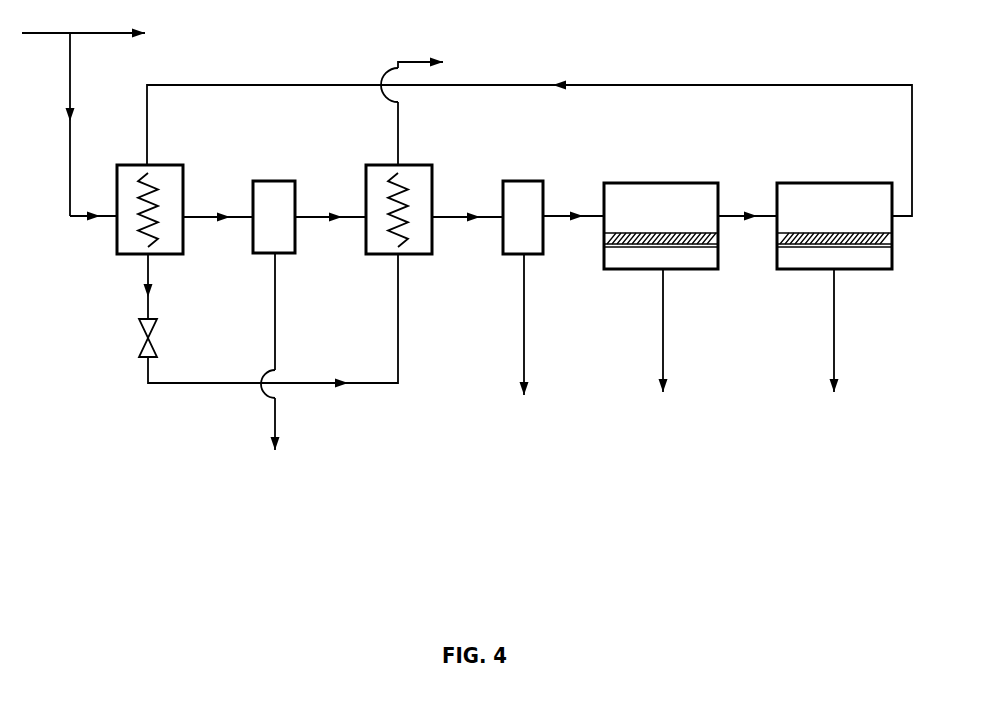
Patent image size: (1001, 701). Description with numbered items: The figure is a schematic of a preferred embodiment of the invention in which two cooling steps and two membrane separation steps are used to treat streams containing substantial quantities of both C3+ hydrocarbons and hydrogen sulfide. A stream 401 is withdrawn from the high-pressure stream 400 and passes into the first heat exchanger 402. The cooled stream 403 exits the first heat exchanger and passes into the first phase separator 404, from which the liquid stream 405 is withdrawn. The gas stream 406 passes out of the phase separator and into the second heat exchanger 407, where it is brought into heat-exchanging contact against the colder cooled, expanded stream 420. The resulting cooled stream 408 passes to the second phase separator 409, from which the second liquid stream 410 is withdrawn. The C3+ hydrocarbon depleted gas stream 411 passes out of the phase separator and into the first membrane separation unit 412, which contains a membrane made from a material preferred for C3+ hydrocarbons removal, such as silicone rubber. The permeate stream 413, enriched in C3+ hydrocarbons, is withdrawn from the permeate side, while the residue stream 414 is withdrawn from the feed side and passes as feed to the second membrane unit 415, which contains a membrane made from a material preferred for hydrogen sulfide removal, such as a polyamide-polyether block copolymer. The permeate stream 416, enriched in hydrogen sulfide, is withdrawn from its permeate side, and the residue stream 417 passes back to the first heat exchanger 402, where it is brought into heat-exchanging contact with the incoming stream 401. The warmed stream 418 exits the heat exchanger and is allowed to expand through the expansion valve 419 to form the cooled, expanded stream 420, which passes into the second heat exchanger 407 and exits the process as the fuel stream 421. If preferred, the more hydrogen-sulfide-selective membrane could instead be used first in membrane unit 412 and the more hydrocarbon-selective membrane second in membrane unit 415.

The high-pressure stream 400 is at (103, 35).
The stream 401 is at (92, 127).
The first heat exchanger 402 is at (117, 255).
The cooled stream 403 is at (218, 205).
The first phase separator 404 is at (253, 254).
The liquid stream 405 is at (272, 365).
The gas stream 406 is at (330, 205).
The second heat exchanger 407 is at (366, 255).
The cooled stream 408 is at (467, 205).
The second phase separator 409 is at (503, 255).
The second liquid stream 410 is at (523, 339).
The C3+ hydrocarbon depleted gas stream 411 is at (573, 204).
The first membrane separation unit 412 is at (604, 270).
The permeate stream 413 is at (662, 345).
The residue stream 414 is at (747, 204).
The second membrane unit 415 is at (777, 270).
The permeate stream 416 is at (834, 345).
The residue stream 417 is at (529, 139).
The warmed stream 418 is at (129, 286).
The expansion valve 419 is at (139, 350).
The cooled, expanded stream 420 is at (273, 321).
The fuel stream 421 is at (432, 108).